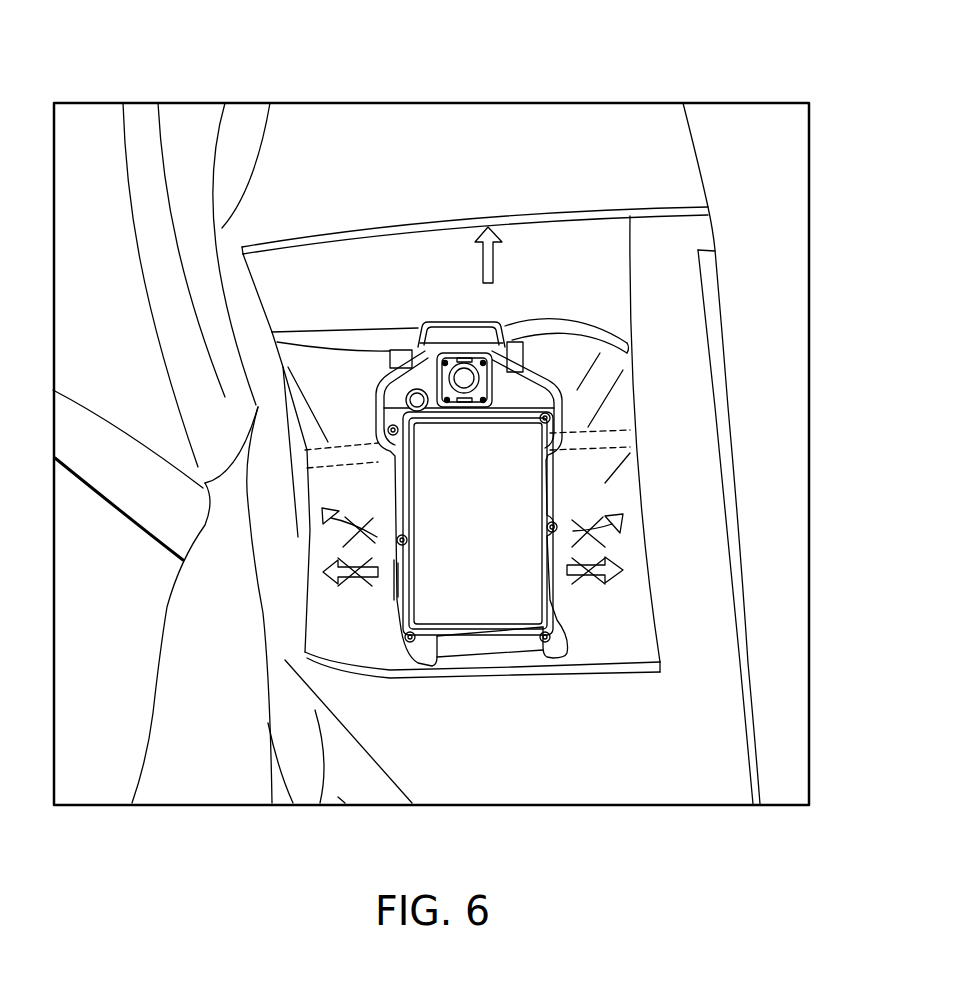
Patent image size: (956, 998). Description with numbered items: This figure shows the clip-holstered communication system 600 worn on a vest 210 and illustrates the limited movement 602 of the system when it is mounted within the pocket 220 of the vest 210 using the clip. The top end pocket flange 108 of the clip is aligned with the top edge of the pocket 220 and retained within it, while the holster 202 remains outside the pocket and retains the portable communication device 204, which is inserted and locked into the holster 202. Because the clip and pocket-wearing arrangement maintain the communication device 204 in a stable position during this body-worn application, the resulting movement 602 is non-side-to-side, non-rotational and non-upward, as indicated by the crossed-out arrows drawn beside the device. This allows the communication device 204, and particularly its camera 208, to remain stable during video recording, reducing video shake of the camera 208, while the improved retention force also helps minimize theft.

The view of clip holstered portable communication device worn on pocket 600 is at (771, 52).
The vest 210 is at (435, 115).
The pocket 220 is at (445, 237).
The top end pocket flange 108 is at (387, 358).
The holster 202 is at (460, 323).
The portable communication device 204 is at (425, 500).
The camera 208 is at (412, 401).
The limited movement 602 is at (577, 528).